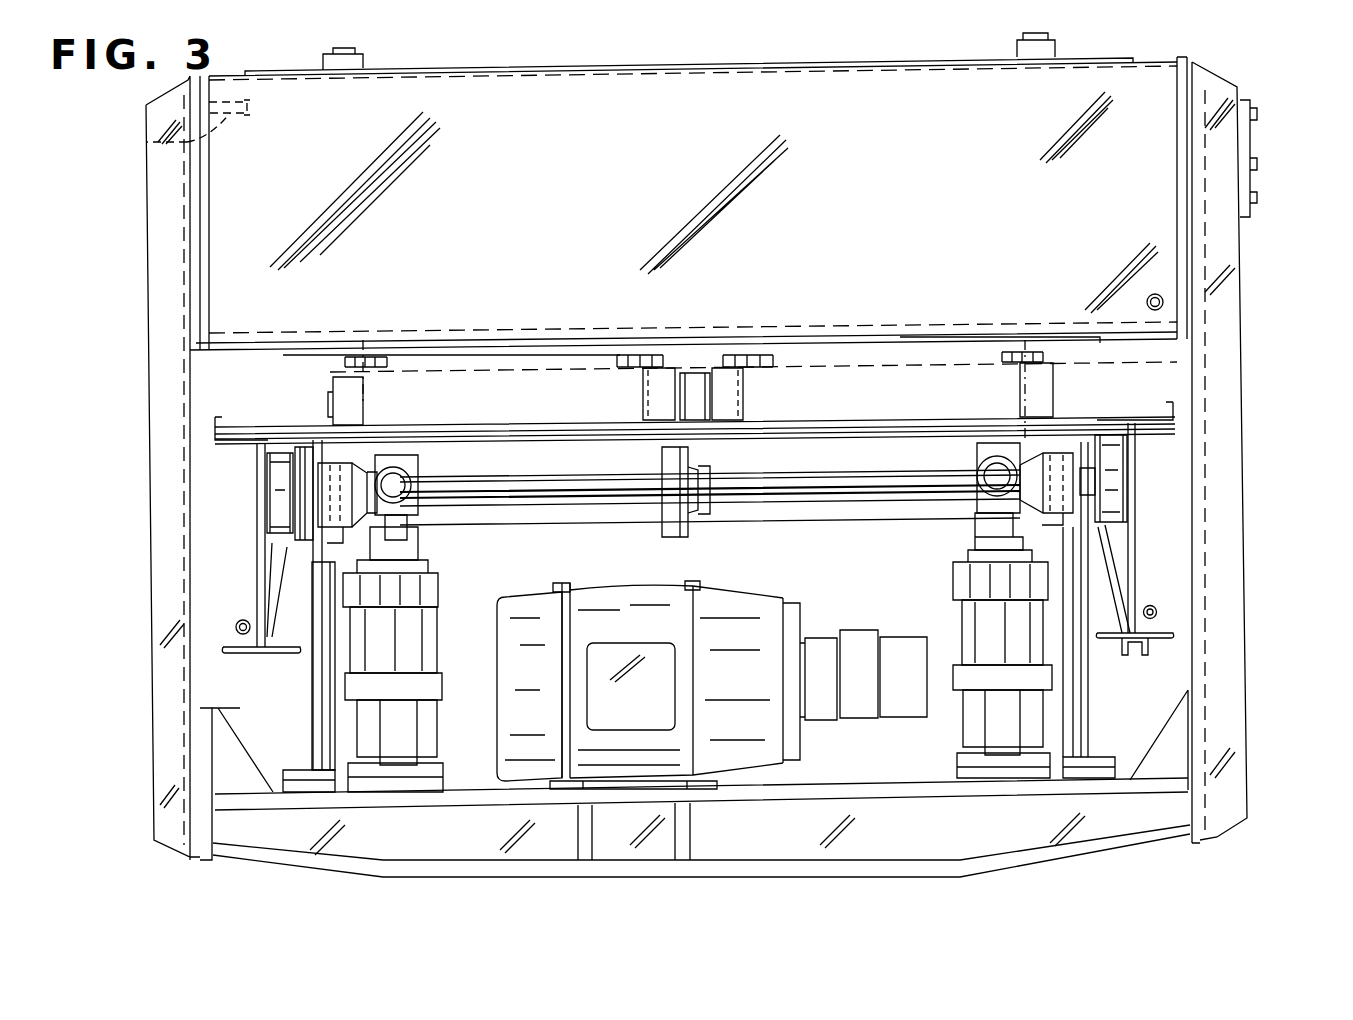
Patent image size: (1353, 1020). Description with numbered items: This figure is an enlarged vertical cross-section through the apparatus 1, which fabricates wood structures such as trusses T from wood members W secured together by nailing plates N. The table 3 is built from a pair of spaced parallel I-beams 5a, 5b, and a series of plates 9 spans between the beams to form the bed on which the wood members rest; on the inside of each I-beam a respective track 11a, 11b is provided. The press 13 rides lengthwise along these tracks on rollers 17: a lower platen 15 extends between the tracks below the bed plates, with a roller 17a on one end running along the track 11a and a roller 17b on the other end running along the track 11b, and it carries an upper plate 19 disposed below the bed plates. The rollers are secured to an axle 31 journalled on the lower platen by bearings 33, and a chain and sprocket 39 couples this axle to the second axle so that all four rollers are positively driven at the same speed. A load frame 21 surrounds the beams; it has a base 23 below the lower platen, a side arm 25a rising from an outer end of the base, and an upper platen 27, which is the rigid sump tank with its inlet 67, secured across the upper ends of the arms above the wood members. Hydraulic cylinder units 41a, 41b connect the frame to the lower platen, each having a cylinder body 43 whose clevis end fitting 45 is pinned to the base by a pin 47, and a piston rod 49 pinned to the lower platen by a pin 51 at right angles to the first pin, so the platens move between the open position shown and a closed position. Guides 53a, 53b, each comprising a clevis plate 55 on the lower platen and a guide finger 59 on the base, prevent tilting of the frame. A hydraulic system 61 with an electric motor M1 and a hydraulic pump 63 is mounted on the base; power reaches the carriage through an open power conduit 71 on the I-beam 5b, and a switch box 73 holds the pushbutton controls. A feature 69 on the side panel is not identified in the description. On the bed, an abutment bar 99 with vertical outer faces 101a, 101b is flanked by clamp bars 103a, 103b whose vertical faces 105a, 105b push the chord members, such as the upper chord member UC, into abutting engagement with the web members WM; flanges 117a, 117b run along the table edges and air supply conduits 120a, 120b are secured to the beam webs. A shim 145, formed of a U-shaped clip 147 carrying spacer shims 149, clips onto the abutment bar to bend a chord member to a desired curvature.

The apparatus 1 is at (1280, 108).
The table 3 is at (1180, 417).
The I-beam 5a is at (312, 562).
The I-beam 5b is at (1090, 578).
The plates 9 is at (265, 457).
The track 11a is at (262, 600).
The track 11b is at (1138, 537).
The press 13 is at (1250, 300).
The lower platen 15 is at (1010, 433).
The rollers 17 is at (1128, 468).
The roller 17a is at (282, 507).
The roller 17b is at (1128, 497).
The upper plate 19 is at (1140, 478).
The load frame 21 is at (150, 742).
The base 23 is at (646, 873).
The side arm 25a is at (188, 852).
The upper platen 27 is at (1140, 118).
The axle 31 is at (532, 468).
The bearings 33 is at (340, 462).
The chain and sprocket 39 is at (278, 482).
The hydraulic cylinder unit 41a is at (442, 598).
The hydraulic cylinder unit 41b is at (958, 598).
The cylinder body 43 is at (402, 660).
The clevis end fitting 45 is at (437, 700).
The pin 47 is at (437, 735).
The piston rod 49 is at (420, 552).
The pin 51 is at (410, 468).
The guide 53a is at (306, 701).
The guide 53b is at (1092, 720).
The clevis plate 55 is at (320, 660).
The guide finger 59 is at (310, 752).
The hydraulic system 61 is at (862, 625).
The hydraulic pump 63 is at (870, 718).
The inlet 67 is at (147, 145).
The hole 69 is at (1164, 304).
The open power conduit 71 is at (1150, 645).
The switch box 73 is at (1252, 190).
The abutment bar 99 is at (698, 372).
The vertical outer face 101a is at (665, 425).
The vertical outer face 101b is at (693, 425).
The clamp bar 103a is at (333, 365).
The clamp bar 103b is at (1143, 410).
The vertical face 105a is at (338, 368).
The vertical face 105b is at (1052, 372).
The flange 117a is at (250, 416).
The flange 117b is at (1180, 427).
The air supply conduit 120a is at (237, 632).
The air supply conduit 120b is at (1157, 613).
The shim 145 is at (720, 390).
The U-shaped clip 147 is at (685, 447).
The spacer shims 149 is at (713, 408).
The electric motor M1 is at (610, 587).
The upper chord member UC is at (400, 420).
The web members WM is at (506, 362).
The truss T is at (906, 375).
The wood members W is at (940, 375).
The nailing plates N is at (1026, 370).